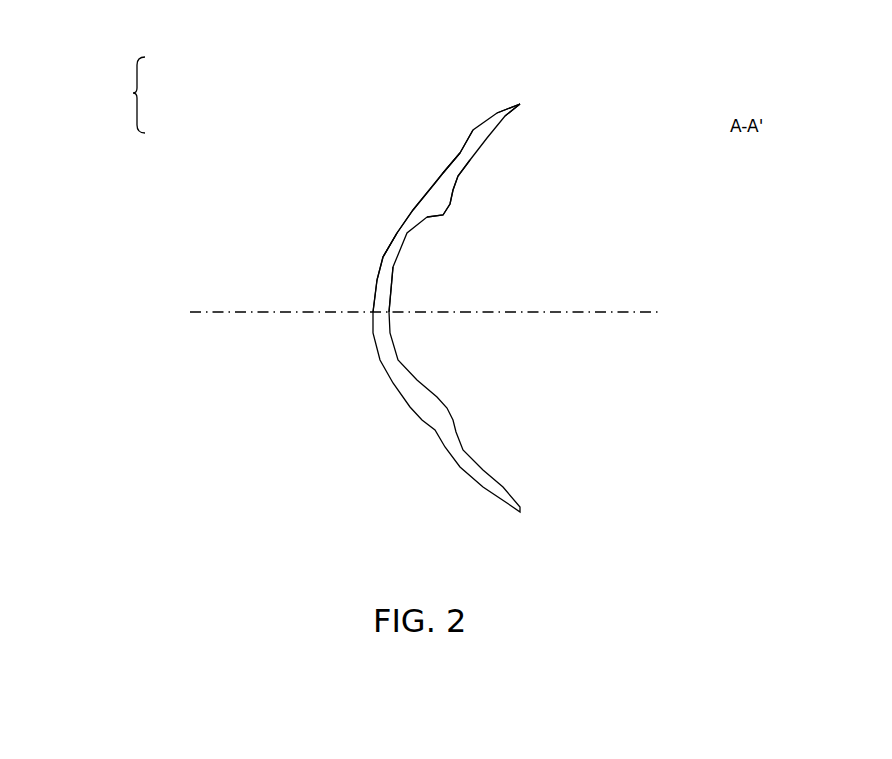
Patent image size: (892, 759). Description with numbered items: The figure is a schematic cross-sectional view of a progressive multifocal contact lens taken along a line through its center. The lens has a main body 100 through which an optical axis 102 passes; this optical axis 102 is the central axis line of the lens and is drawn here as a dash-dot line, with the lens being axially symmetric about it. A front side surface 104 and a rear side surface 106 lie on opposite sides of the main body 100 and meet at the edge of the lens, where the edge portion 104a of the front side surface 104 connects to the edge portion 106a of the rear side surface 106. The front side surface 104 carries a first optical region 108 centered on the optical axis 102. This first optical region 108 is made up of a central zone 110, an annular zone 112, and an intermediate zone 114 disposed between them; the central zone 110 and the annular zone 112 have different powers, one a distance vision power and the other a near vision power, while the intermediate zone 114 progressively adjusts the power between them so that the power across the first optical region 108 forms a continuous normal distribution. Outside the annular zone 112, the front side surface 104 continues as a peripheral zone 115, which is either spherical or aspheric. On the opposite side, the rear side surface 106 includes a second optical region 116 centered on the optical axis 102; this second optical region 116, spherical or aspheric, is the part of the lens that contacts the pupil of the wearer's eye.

The main body 100 is at (493, 122).
The optical axis 102 is at (583, 311).
The front side surface 104 is at (407, 192).
The edge portion of the front side surface 104a is at (520, 104).
The rear side surface 106 is at (450, 215).
The edge portion of the rear side surface 106a is at (520, 105).
The first optical region 108 is at (142, 96).
The central zone 110 is at (373, 300).
The annular zone 112 is at (393, 227).
The intermediate zone 114 is at (380, 255).
The peripheral zone 115 is at (455, 143).
The second optical region 116 is at (395, 292).